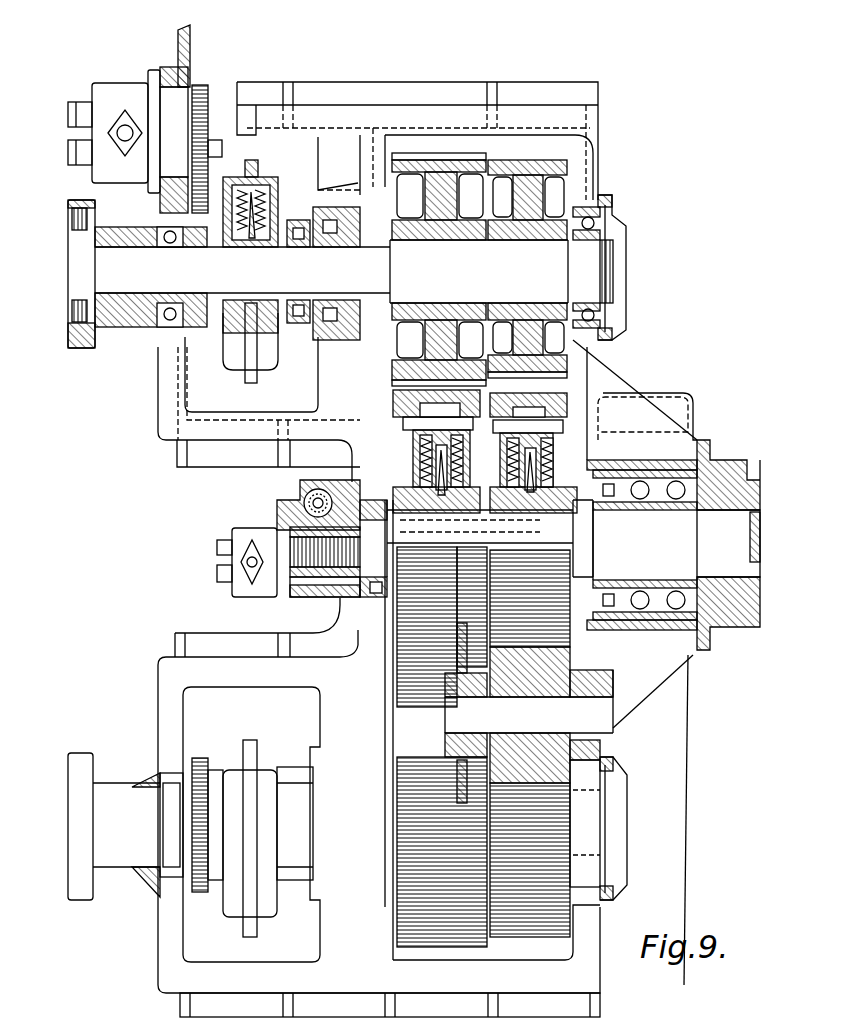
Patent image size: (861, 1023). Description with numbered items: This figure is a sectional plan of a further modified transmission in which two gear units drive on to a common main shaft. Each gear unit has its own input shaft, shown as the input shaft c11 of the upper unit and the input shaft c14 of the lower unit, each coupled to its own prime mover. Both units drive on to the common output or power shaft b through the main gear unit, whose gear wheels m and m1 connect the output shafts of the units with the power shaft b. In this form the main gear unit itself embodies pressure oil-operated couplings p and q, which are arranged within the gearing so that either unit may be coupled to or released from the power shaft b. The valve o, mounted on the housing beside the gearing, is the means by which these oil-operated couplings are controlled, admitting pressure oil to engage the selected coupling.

The input shaft c11 is at (124, 288).
The input shaft c14 is at (132, 800).
The pressure oil-operated coupling p is at (412, 442).
The pressure oil-operated coupling q is at (560, 440).
The valve o is at (305, 497).
The output or power shaft b is at (645, 556).
The gear wheel of main gear unit m is at (410, 630).
The gear wheel of main gear unit m1 is at (548, 612).